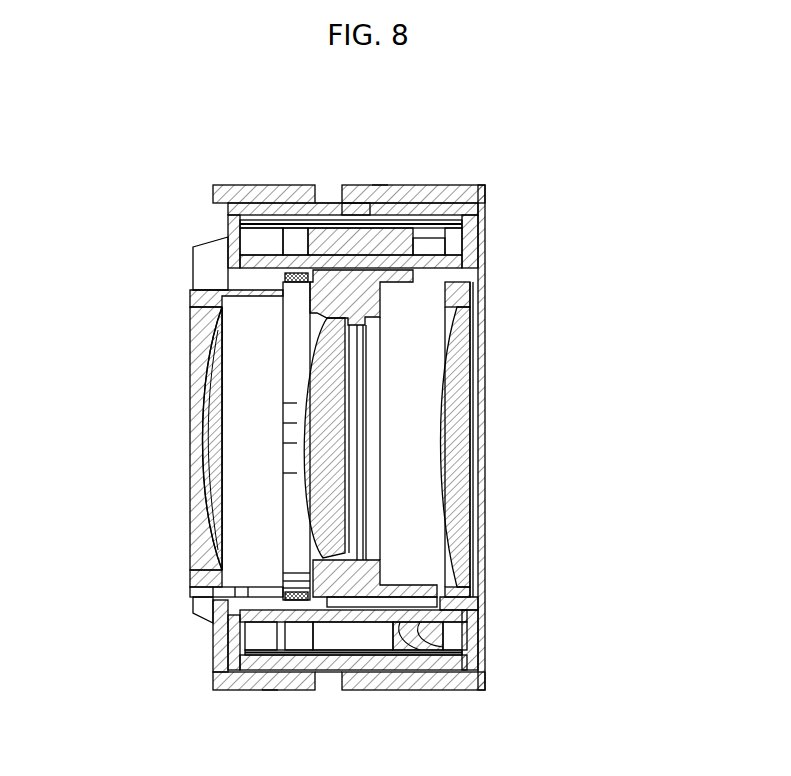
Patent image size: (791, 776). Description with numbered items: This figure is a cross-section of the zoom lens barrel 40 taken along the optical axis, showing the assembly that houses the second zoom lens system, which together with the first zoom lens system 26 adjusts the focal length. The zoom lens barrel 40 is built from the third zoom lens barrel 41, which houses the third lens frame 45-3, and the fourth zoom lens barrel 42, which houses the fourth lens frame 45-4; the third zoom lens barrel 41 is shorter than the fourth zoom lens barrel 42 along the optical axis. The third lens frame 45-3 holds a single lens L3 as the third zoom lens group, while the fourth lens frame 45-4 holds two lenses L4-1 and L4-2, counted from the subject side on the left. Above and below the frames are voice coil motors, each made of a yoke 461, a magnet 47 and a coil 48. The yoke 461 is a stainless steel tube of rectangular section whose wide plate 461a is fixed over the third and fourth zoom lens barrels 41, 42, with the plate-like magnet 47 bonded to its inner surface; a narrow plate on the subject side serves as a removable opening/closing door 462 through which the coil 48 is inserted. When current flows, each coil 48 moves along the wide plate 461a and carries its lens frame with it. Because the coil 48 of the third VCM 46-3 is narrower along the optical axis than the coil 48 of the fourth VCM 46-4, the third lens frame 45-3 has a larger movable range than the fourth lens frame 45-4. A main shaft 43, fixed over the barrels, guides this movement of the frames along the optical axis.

The zoom lens barrel 40 is at (582, 478).
The third zoom lens barrel 41 is at (268, 190).
The fourth zoom lens barrel 42 is at (437, 195).
The main shaft 43 is at (237, 383).
The first zoom lens system 26 is at (290, 533).
The magnet 47 is at (380, 185).
The coil 48 is at (358, 200).
The yoke 461 is at (466, 219).
The wide plate 461a is at (327, 204).
The opening/closing door 462 is at (228, 215).
The third VCM 46-3 is at (470, 637).
The fourth VCM 46-4 is at (486, 198).
The third lens frame 45-3 is at (193, 294).
The fourth lens frame 45-4 is at (485, 600).
The lens L3 is at (205, 420).
The lens L4-1 is at (323, 420).
The lens L4-2 is at (458, 437).